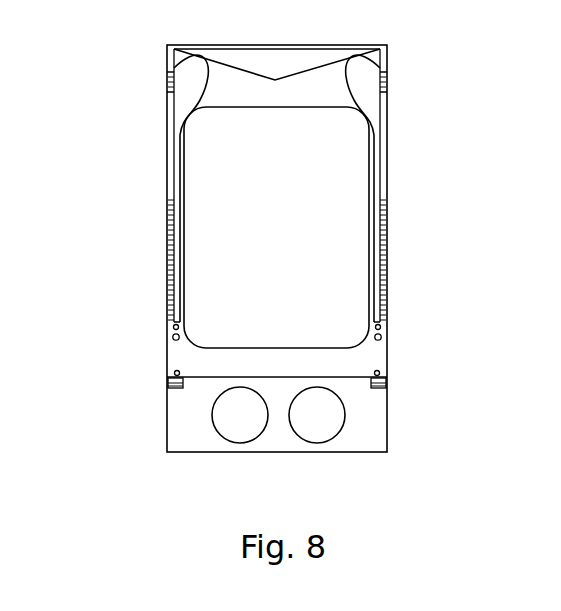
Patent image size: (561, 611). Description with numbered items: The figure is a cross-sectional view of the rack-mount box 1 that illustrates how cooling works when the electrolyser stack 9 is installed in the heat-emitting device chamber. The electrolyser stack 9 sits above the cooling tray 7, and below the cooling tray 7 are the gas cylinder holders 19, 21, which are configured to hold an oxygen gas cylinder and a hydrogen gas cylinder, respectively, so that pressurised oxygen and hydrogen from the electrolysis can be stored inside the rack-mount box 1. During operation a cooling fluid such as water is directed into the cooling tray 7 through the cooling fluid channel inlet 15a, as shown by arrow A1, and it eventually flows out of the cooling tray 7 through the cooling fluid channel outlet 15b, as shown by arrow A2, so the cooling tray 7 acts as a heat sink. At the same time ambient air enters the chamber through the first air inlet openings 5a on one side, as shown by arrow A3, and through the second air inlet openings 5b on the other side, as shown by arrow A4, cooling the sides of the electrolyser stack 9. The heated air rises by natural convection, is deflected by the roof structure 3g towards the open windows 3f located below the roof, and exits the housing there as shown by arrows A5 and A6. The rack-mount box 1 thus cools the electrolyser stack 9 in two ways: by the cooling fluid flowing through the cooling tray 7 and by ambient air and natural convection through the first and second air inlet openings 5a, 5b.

The rack-mount box 1 is at (377, 10).
The open windows 3f is at (160, 80).
The roof structure 3g is at (252, 75).
The first air inlet openings 5a is at (155, 216).
The second air inlet openings 5b is at (391, 216).
The cooling tray 7 is at (217, 370).
The electrolyser stack 9 is at (290, 229).
The cooling fluid channel inlet 15a is at (170, 338).
The cooling fluid channel outlet 15b is at (384, 336).
The gas cylinder holder 19 is at (255, 427).
The gas cylinder holder 21 is at (332, 427).
The arrow A1 is at (165, 350).
The arrow A2 is at (381, 339).
The arrow A3 is at (130, 227).
The arrow A4 is at (495, 227).
The arrow A5 is at (180, 71).
The arrow A6 is at (374, 71).